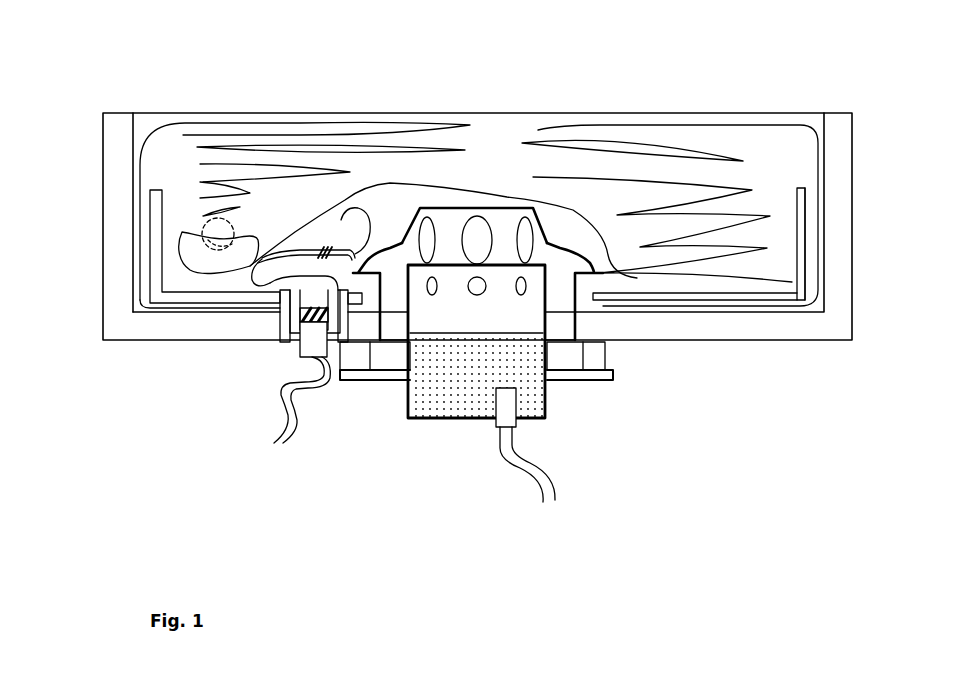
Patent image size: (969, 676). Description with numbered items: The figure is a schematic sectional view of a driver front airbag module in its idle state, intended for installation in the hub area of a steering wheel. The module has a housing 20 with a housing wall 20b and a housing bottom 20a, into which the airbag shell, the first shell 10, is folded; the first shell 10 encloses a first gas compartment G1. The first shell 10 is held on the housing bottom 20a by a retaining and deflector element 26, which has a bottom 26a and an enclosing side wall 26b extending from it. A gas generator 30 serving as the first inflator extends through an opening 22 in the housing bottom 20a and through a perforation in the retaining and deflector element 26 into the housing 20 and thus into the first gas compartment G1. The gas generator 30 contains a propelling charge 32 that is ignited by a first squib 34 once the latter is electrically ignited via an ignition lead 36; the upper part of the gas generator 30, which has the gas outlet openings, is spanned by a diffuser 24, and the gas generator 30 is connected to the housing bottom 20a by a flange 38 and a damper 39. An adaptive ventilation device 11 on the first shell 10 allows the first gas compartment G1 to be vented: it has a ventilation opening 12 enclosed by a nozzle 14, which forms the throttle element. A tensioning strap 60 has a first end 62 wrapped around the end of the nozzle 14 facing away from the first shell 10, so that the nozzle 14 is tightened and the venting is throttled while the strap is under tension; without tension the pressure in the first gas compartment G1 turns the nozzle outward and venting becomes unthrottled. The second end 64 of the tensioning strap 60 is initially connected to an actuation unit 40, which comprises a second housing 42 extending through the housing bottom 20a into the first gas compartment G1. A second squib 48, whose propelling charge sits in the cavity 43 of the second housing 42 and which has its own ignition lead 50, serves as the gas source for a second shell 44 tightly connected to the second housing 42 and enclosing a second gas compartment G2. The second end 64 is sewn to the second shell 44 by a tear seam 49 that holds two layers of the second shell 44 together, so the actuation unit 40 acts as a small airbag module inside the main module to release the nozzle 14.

The first shell 10 is at (617, 125).
The adaptive ventilation device 11 is at (235, 232).
The ventilation opening 12 is at (220, 232).
The nozzle 14 is at (213, 230).
The housing 20 is at (115, 327).
The housing bottom 20a is at (758, 322).
The housing wall 20b is at (115, 170).
The opening 22 is at (563, 332).
The diffuser 24 is at (523, 208).
The retaining and deflector element 26 is at (800, 295).
The bottom 26a is at (678, 300).
The enclosing side wall 26b is at (802, 200).
The gas generator 30 is at (410, 387).
The propelling charge 32 is at (460, 387).
The first squib 34 is at (508, 407).
The ignition lead 36 is at (523, 470).
The flange 38 is at (595, 375).
The damper 39 is at (600, 357).
The actuation unit 40 is at (300, 348).
The second housing 42 is at (295, 318).
The cavity 43 is at (300, 333).
The second shell 44 is at (287, 303).
The second squib 48 is at (305, 345).
The tear seam 49 is at (323, 248).
The ignition lead 50 is at (307, 380).
The tensioning strap 60 is at (187, 267).
The first end 62 is at (203, 235).
The second end 64 is at (320, 250).
The first gas compartment G1 is at (283, 133).
The second gas compartment G2 is at (312, 287).